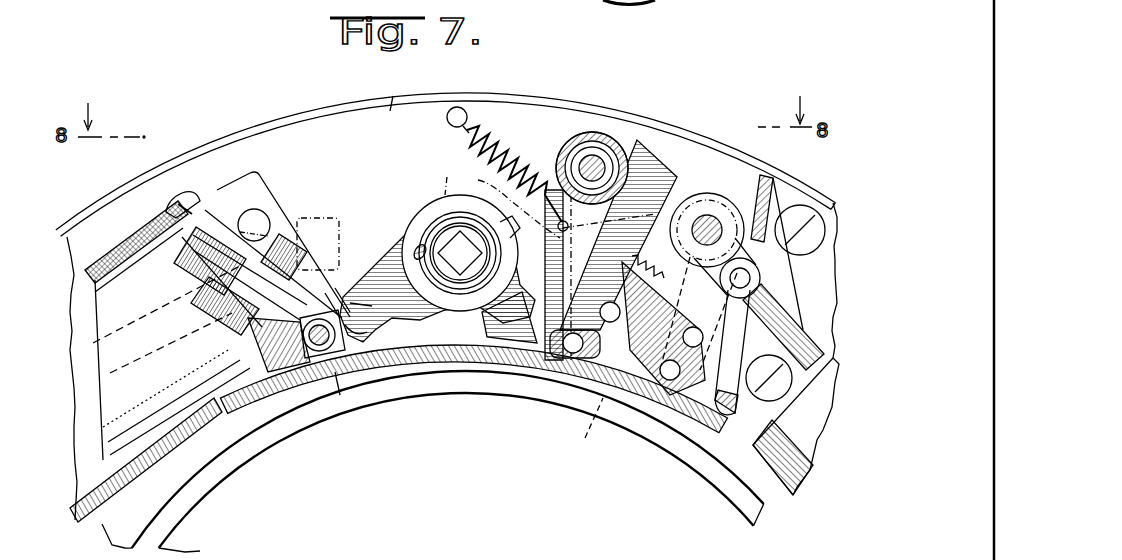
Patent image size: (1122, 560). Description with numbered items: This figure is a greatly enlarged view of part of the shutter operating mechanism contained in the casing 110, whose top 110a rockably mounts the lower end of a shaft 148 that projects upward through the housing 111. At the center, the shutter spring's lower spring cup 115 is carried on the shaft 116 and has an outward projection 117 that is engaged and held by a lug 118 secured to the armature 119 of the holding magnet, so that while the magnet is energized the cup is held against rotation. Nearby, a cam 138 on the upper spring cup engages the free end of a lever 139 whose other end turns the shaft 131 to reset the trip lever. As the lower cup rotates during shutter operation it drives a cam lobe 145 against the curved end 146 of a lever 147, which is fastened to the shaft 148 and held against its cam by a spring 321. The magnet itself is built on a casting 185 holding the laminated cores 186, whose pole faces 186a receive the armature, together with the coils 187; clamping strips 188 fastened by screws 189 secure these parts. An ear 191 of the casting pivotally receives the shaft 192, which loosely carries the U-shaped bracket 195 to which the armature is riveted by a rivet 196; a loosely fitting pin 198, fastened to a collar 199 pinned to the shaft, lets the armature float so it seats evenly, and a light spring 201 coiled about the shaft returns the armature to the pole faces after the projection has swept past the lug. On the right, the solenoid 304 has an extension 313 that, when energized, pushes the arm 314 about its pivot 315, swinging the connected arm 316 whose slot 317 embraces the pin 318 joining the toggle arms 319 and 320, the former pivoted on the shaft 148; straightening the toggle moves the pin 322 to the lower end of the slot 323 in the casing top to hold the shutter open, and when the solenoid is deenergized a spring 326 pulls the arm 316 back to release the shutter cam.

The casing 110 is at (344, 104).
The top of casing 110a is at (396, 90).
The housing 111 is at (440, 375).
The lower spring cup 115 is at (417, 228).
The shaft 116 is at (460, 253).
The projection 117 is at (362, 304).
The lug 118 is at (366, 331).
The armature 119 is at (281, 234).
The shaft 131 is at (433, 227).
The cam 138 is at (447, 177).
The lever 139 is at (666, 212).
The cam lobe 145 is at (517, 297).
The curved end of lever 146 is at (500, 345).
The lever 147 is at (556, 187).
The shaft 148 is at (580, 166).
The casting 185 is at (225, 405).
The cores 186 is at (200, 300).
The pole faces 186a is at (237, 250).
The coils 187 is at (84, 286).
The clamping strips 188 is at (193, 260).
The screws 189 is at (230, 333).
The ear 191 is at (250, 184).
The shaft 192 is at (456, 468).
The U-shaped bracket 195 is at (318, 244).
The rivet 196 is at (262, 228).
The pin 198 is at (334, 300).
The collar 199 is at (322, 363).
The light spring 201 is at (337, 395).
The solenoid 304 is at (813, 468).
The extension 313 is at (790, 305).
The arm 314 is at (760, 276).
The pivot 315 is at (672, 377).
The arm 316 is at (638, 355).
The slot 317 is at (643, 292).
The pin 318 is at (512, 244).
The toggle arm 319 is at (609, 212).
The toggle arm 320 is at (555, 352).
The spring 321 is at (498, 143).
The pin 322 is at (580, 360).
The slot 323 is at (580, 431).
The spring 326 is at (636, 258).